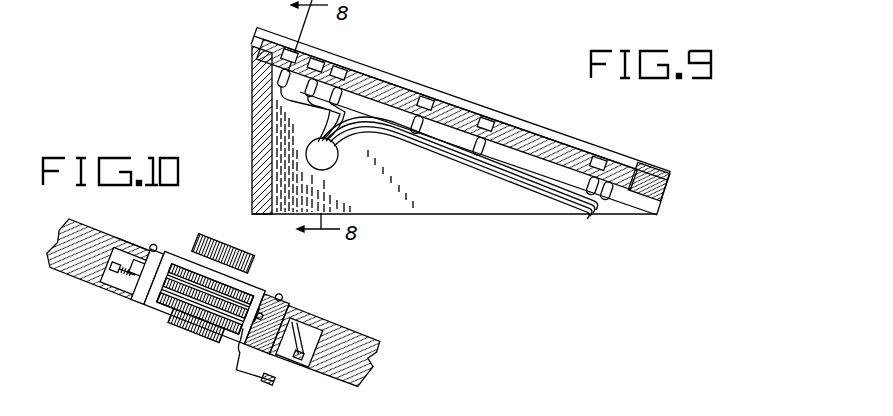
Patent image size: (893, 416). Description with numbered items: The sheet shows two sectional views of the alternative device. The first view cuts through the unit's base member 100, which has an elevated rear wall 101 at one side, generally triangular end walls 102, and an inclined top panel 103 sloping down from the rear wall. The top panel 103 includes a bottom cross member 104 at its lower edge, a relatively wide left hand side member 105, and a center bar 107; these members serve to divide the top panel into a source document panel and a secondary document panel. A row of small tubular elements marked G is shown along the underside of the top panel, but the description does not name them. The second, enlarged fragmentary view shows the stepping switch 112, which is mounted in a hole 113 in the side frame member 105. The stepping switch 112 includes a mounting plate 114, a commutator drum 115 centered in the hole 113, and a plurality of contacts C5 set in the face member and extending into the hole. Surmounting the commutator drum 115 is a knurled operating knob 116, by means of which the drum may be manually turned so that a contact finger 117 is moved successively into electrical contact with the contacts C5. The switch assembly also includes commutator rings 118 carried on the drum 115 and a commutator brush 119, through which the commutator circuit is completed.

In FIG. 9, the base member 100 is at (465, 66).
In FIG. 9, the elevated rear wall 101 is at (253, 103).
In FIG. 9, the end walls 102 is at (447, 207).
In FIG. 9, the inclined top panel 103 is at (580, 168).
In FIG. 9, the bottom cross member 104 is at (655, 172).
In FIG. 9, the center bar 107 is at (523, 121).
In FIG. 9, the tube G is at (343, 101).
In FIG. 10, the left hand side member 105 is at (360, 341).
In FIG. 10, the stepping switch 112 is at (300, 266).
In FIG. 10, the hole 113 is at (150, 302).
In FIG. 10, the mounting plate 114 is at (149, 251).
In FIG. 10, the commutator drum 115 is at (172, 303).
In FIG. 10, the knurled operating knob 116 is at (215, 234).
In FIG. 10, the contact finger 117 is at (156, 303).
In FIG. 10, the commutator rings 118 is at (222, 342).
In FIG. 10, the commutator brush 119 is at (256, 376).
In FIG. 10, the contacts C5 is at (170, 238).